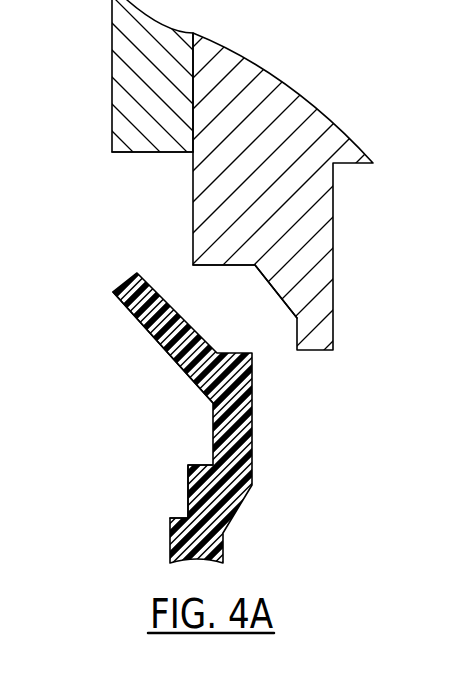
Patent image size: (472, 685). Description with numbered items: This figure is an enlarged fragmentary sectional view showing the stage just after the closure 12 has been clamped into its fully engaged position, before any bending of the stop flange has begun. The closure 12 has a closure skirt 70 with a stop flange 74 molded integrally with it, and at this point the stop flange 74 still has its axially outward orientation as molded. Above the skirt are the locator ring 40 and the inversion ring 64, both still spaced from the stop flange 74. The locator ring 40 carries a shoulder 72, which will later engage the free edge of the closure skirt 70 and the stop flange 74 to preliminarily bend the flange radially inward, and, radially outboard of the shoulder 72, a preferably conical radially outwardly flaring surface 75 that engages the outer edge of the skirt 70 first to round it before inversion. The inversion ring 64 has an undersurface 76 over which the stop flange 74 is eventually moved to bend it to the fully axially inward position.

The closure 12 is at (266, 472).
The locator ring 40 is at (336, 223).
The inversion ring 64 is at (110, 60).
The closure skirt 70 is at (188, 480).
The shoulder 72 is at (217, 266).
The stop flange 74 is at (128, 315).
The radially outwardly flaring surface 75 is at (277, 292).
The undersurface 76 is at (143, 153).